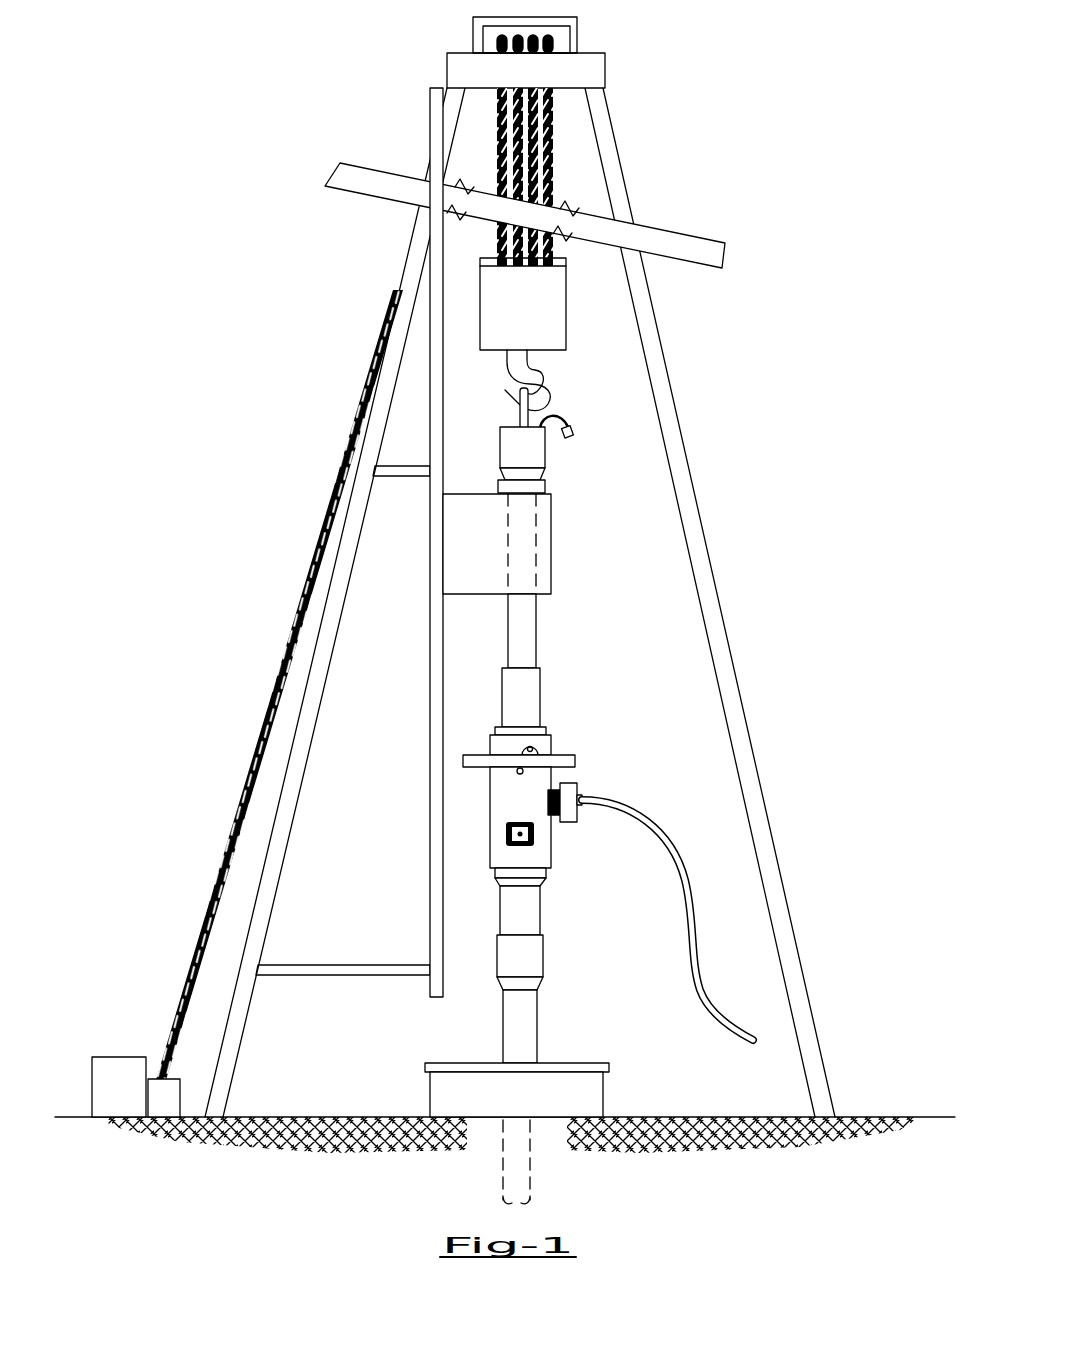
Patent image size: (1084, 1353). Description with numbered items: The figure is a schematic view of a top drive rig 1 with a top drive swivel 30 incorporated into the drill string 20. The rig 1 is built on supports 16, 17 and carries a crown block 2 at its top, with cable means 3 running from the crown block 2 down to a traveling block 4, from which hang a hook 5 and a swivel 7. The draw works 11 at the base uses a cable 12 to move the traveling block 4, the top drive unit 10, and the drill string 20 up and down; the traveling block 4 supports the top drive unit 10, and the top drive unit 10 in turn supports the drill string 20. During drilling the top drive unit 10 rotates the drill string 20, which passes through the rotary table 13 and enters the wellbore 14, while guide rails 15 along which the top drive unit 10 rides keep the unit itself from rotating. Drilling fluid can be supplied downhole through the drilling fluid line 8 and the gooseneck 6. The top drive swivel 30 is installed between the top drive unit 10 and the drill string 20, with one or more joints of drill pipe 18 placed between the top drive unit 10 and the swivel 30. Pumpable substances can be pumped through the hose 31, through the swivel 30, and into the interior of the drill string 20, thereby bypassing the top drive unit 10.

The rig 1 is at (280, 288).
The crown block 2 is at (577, 44).
The cable means 3 is at (560, 147).
The traveling block 4 is at (566, 313).
The hook 5 is at (540, 367).
The gooseneck 6 is at (555, 416).
The swivel 7 is at (545, 457).
The drilling fluid line 8 is at (575, 433).
The top drive unit 10 is at (551, 540).
The draw works 11 is at (127, 1057).
The cable 12 is at (240, 795).
The rotary table 13 is at (603, 1090).
The wellbore 14 is at (533, 1156).
The guide rails 15 is at (430, 858).
The support 16 is at (410, 247).
The support 17 is at (625, 178).
The drill pipe 18 is at (536, 655).
The drill string 20 is at (537, 1027).
The top drive swivel 30 is at (551, 740).
The hose 31 is at (615, 800).